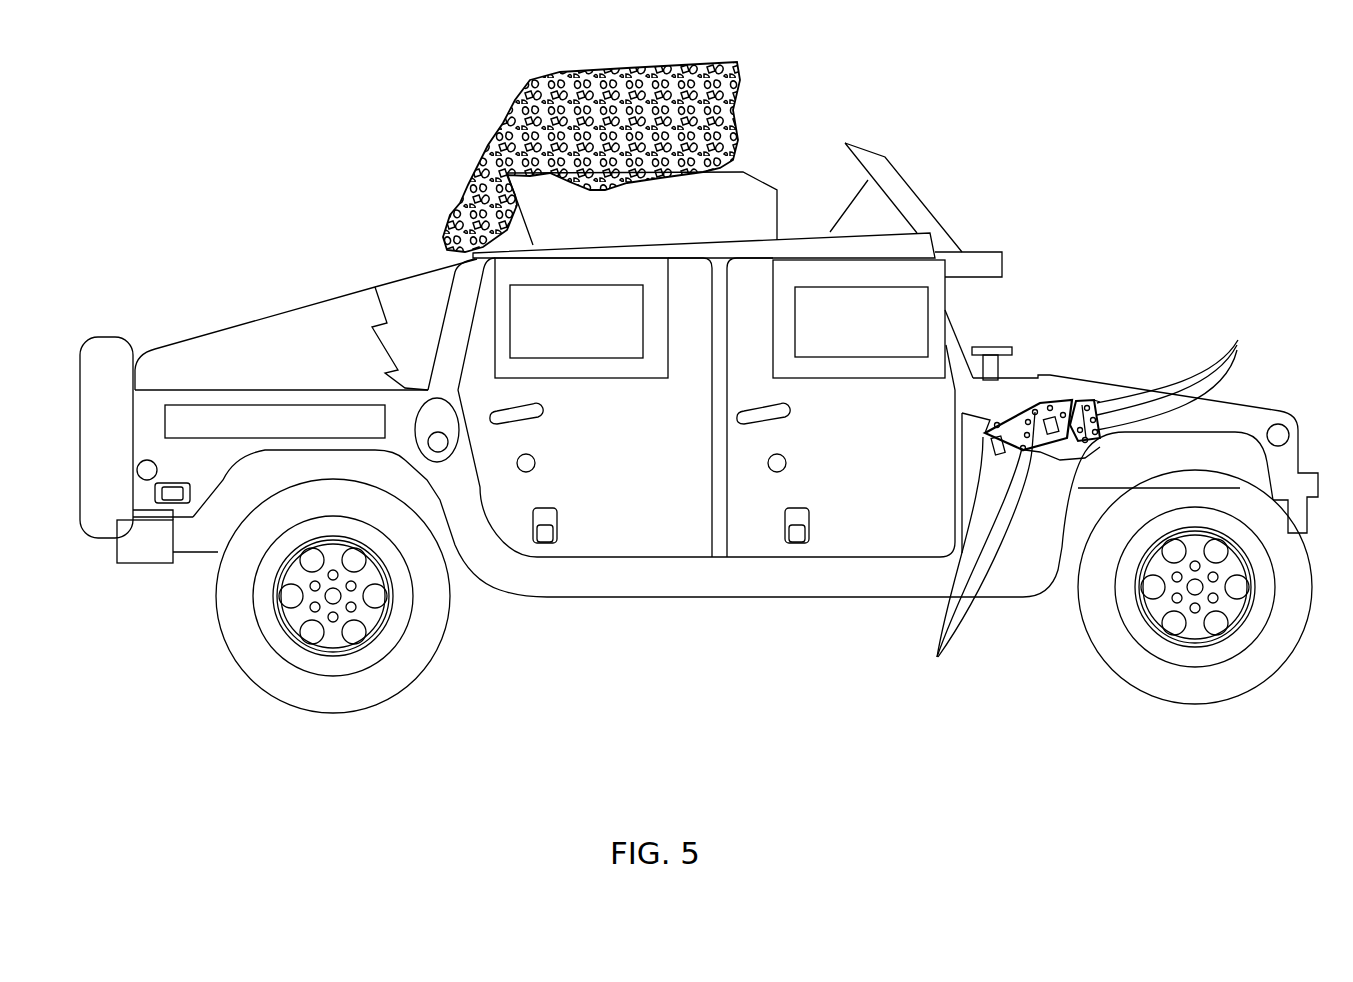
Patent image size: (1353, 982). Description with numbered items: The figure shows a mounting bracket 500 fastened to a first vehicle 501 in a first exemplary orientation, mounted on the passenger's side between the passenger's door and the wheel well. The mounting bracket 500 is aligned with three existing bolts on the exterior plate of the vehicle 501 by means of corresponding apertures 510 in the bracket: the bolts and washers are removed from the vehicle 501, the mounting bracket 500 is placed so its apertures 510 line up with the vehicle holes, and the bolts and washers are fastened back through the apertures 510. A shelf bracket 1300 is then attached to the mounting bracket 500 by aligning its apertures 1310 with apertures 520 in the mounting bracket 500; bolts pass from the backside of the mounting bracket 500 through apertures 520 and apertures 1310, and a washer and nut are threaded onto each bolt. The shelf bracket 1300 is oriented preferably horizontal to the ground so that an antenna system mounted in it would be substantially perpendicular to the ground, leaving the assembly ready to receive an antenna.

The mounting bracket 500 is at (1060, 403).
The vehicle 501 is at (870, 598).
The apertures 510 is at (972, 567).
The apertures 520 is at (1103, 396).
The shelf bracket 1300 is at (1082, 405).
The apertures 1310 is at (1238, 340).